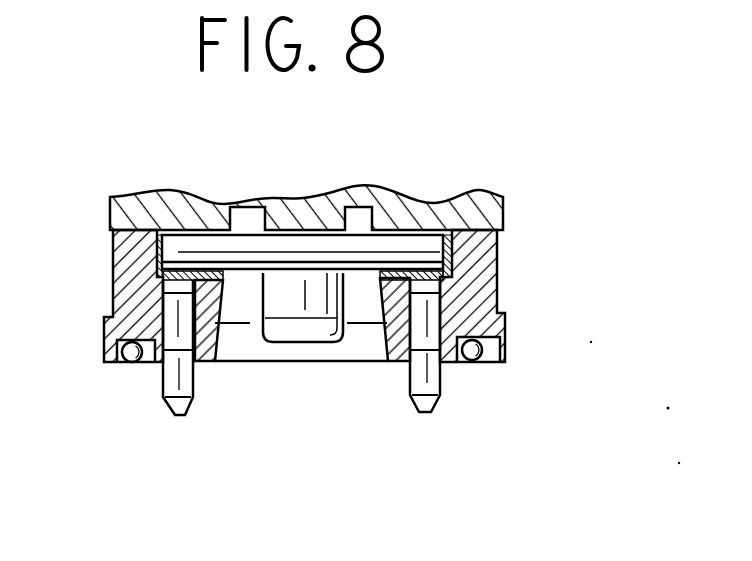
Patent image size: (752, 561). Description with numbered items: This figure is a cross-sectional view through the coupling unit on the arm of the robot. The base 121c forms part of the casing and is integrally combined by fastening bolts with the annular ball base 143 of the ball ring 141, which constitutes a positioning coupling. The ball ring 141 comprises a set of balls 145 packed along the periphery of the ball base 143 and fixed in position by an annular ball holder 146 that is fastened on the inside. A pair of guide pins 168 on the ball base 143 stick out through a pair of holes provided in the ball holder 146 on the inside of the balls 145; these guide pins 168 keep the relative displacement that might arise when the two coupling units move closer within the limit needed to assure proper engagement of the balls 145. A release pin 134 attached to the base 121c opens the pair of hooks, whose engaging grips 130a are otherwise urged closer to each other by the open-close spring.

The release pin 134 is at (391, 247).
The base 121c is at (488, 218).
The ball base 143 is at (500, 273).
The ball ring 141 is at (120, 380).
The guide pins 168 is at (185, 405).
The ball holder 146 is at (207, 363).
The engaging grips 130a is at (307, 331).
The balls 145 is at (482, 360).